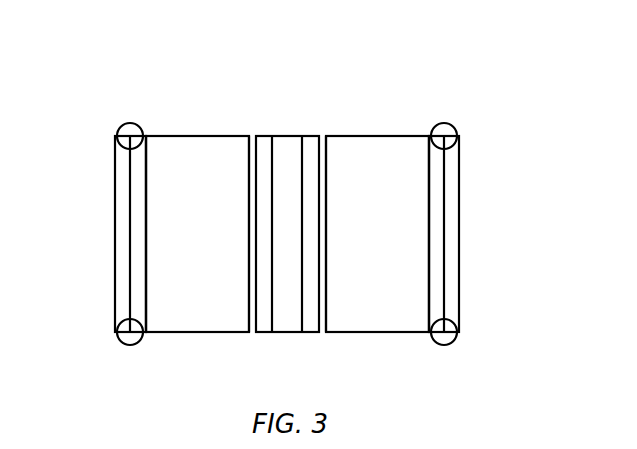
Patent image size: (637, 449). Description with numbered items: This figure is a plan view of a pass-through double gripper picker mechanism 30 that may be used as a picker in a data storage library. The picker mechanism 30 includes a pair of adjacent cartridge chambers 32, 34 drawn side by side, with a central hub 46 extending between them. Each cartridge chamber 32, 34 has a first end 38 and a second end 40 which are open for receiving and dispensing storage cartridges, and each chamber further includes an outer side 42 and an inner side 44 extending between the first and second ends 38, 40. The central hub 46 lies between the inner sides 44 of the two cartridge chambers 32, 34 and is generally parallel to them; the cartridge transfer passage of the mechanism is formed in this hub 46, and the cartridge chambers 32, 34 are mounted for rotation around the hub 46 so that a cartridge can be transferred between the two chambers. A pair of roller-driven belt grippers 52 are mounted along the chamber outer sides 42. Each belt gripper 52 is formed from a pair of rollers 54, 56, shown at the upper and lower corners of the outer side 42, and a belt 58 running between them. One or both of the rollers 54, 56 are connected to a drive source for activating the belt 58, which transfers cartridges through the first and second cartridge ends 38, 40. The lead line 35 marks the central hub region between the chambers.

The pass-through double gripper picker mechanism 30 is at (233, 70).
The cartridge chamber 32 is at (176, 138).
The cartridge chamber 34 is at (387, 143).
The dielectric spacer 35 is at (294, 138).
The first end 38 is at (193, 137).
The second end 40 is at (192, 334).
The outer side 42 is at (128, 221).
The inner side 44 is at (248, 272).
The central hub 46 is at (283, 322).
The roller-driven belt gripper 52 is at (473, 164).
The roller 54 is at (117, 125).
The roller 56 is at (119, 339).
The belt 58 is at (146, 192).